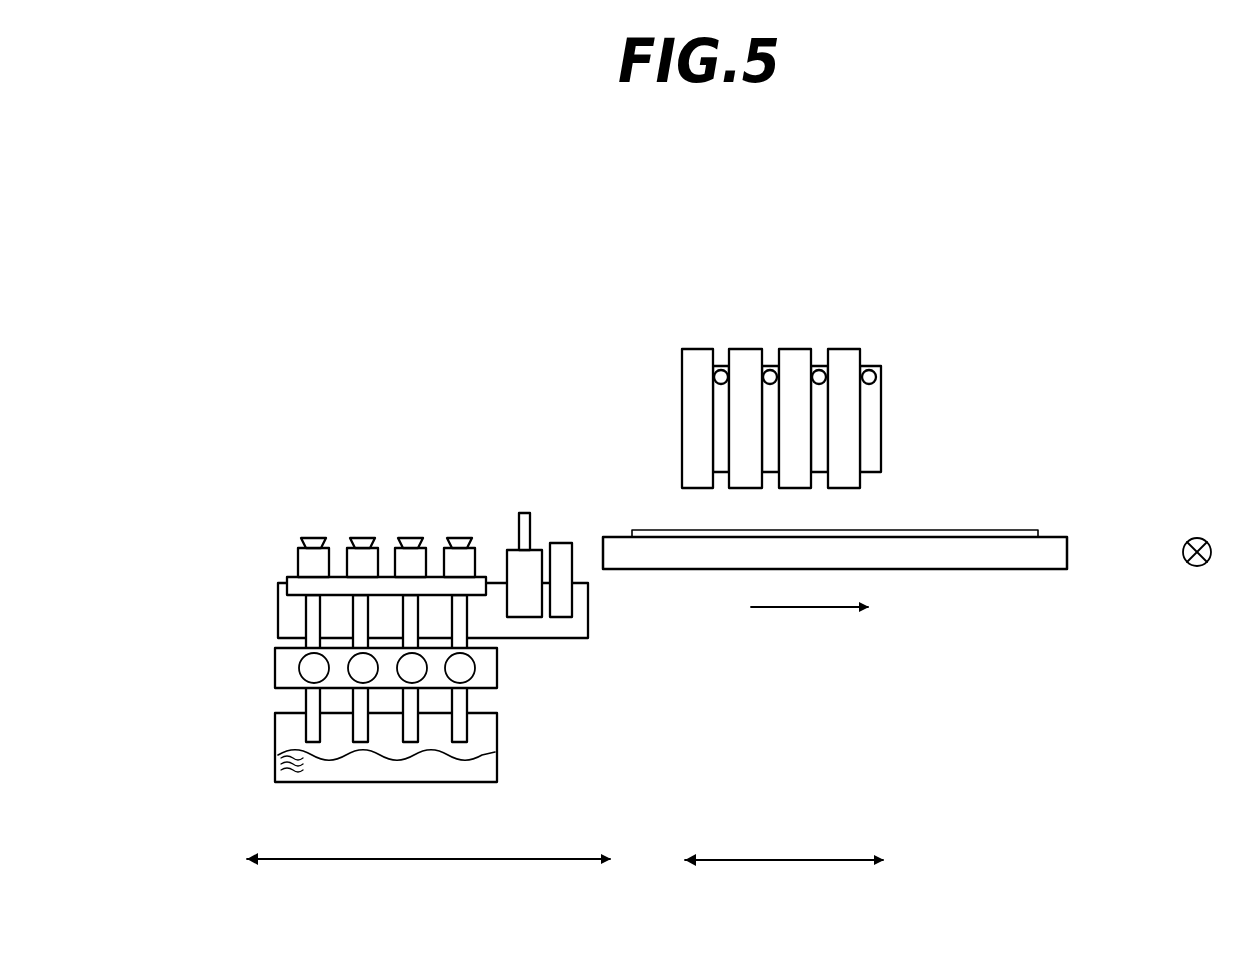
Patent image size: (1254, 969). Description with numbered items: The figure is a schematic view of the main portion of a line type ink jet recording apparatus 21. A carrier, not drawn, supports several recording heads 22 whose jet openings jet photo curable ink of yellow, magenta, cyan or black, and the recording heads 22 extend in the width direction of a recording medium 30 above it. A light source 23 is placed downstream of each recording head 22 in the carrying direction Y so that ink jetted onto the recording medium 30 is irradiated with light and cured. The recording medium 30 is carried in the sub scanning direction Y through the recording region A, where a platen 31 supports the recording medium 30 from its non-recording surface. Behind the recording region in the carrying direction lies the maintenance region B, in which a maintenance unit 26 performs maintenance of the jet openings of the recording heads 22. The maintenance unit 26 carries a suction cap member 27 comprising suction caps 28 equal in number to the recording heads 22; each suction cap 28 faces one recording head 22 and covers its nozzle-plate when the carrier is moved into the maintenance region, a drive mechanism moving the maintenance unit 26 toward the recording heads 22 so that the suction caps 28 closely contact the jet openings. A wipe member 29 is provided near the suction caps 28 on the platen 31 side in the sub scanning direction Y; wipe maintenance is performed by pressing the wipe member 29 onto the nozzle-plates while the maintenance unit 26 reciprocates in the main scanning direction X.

The ink jet recording apparatus 21 is at (1034, 264).
The recording head 22 is at (693, 357).
The light source 23 is at (775, 373).
The maintenance unit 26 is at (503, 792).
The suction cap member 27 is at (473, 494).
The suction cap 28 is at (298, 562).
The wipe member 29 is at (582, 494).
The recording medium 30 is at (1025, 530).
The platen 31 is at (1008, 555).